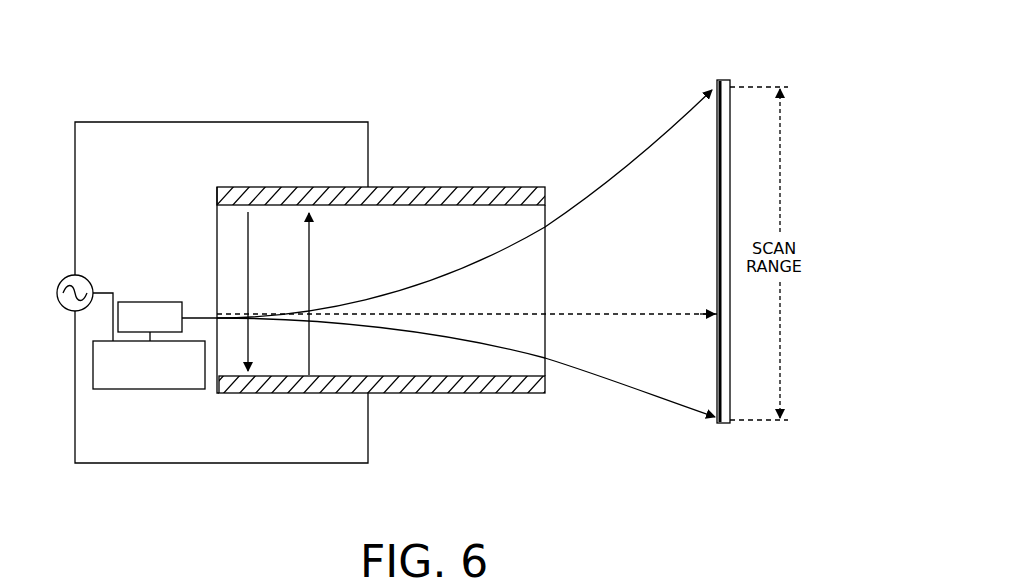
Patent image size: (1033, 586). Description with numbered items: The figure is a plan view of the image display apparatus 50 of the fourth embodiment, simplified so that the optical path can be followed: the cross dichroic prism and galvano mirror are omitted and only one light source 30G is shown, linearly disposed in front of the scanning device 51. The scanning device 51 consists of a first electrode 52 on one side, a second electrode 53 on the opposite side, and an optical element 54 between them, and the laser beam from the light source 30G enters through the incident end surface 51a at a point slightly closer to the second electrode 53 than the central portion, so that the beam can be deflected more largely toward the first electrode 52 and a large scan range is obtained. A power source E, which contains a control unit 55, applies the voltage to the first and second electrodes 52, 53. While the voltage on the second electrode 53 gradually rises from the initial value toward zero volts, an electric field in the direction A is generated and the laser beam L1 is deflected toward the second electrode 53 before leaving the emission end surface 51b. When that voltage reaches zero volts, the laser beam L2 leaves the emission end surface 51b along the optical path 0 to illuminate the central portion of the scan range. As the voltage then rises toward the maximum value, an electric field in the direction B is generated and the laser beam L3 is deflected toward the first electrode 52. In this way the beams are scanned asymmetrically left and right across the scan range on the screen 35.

The image display apparatus 50 is at (659, 62).
The scanning device 51 is at (397, 283).
The incident end surface 51a is at (216, 395).
The emission end surface 51b is at (545, 333).
The first electrode 52 is at (440, 187).
The second electrode 53 is at (447, 393).
The optical element 54 is at (545, 252).
The control unit 55 is at (125, 389).
The green-colored light source 30G is at (155, 302).
The screen 35 is at (723, 425).
The power source E is at (89, 280).
The direction A is at (248, 258).
The direction B is at (309, 258).
The laser beam L1 is at (632, 386).
The laser beam L2 is at (651, 316).
The laser beam L3 is at (632, 163).
The optical path O 0 is at (688, 316).